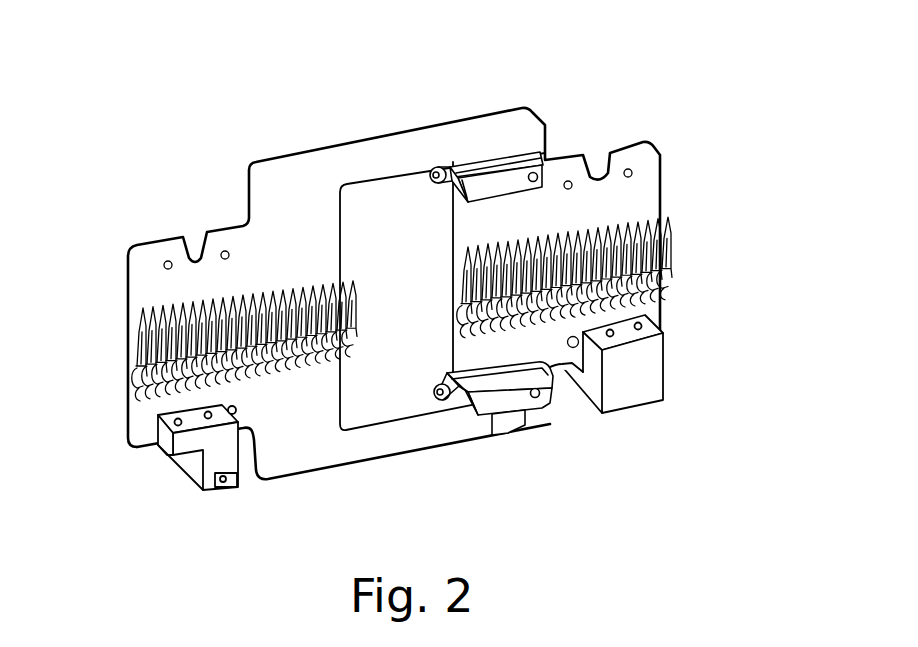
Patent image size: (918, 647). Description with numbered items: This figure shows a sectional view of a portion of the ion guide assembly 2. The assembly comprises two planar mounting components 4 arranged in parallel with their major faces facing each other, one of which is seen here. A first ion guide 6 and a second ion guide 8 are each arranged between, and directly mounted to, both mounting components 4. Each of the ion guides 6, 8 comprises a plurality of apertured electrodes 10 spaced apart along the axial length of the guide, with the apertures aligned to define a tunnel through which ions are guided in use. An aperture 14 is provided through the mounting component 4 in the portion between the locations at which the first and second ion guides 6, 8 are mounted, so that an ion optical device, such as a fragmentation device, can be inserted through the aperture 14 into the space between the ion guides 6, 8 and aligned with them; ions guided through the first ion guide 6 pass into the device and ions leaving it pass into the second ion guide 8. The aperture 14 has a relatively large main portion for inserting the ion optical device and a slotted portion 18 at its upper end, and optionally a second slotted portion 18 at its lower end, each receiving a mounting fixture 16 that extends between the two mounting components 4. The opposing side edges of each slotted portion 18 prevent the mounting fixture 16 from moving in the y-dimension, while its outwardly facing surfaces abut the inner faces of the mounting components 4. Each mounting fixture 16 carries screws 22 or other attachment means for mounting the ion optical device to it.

The ion guide assembly 2 is at (208, 78).
The planar mounting component 4 is at (560, 332).
The first ion guide 6 is at (265, 272).
The second ion guide 8 is at (565, 214).
The electrode 10 is at (155, 307).
The aperture 14 is at (385, 205).
The mounting fixture 16 is at (517, 175).
The slotted portion 18 is at (478, 152).
The screw 22 is at (430, 167).